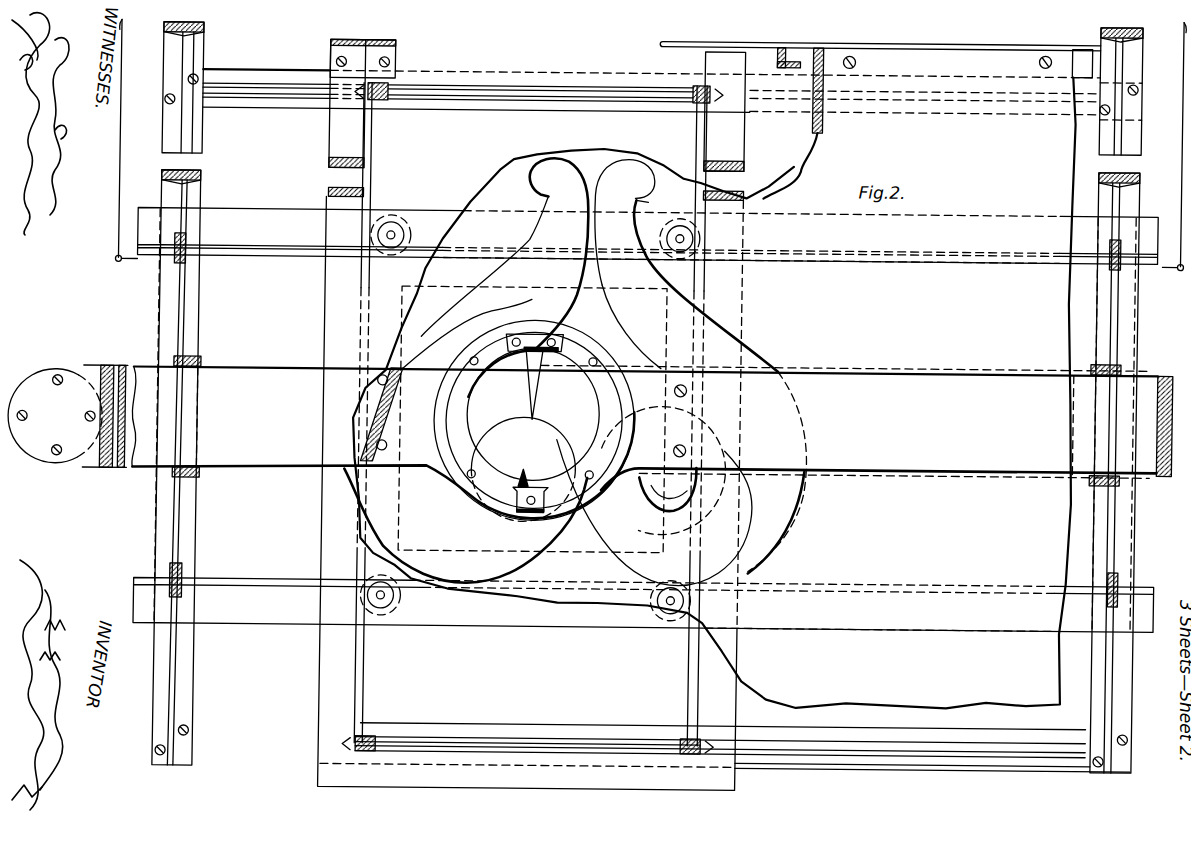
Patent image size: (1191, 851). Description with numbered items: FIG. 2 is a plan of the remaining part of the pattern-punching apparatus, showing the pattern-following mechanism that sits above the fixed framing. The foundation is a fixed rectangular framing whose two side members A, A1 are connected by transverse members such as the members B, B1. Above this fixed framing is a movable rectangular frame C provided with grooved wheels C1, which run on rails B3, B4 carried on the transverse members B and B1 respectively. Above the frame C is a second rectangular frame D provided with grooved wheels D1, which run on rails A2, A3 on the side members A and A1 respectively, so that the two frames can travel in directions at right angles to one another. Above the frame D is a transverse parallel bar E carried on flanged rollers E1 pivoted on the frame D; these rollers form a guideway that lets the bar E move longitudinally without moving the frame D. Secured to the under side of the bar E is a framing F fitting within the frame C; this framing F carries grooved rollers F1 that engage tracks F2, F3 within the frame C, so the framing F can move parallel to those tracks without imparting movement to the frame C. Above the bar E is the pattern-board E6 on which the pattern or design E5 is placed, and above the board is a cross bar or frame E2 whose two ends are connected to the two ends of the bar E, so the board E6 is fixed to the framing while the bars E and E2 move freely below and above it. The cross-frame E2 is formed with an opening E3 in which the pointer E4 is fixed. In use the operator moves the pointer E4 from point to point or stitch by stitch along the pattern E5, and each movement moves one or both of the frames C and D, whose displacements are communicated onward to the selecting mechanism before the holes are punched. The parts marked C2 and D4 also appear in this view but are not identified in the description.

The side member A is at (160, 140).
The side member A1 is at (1125, 140).
The rail A2 is at (186, 303).
The rail A3 is at (1122, 197).
The transverse member B is at (810, 760).
The transverse member B1 is at (505, 100).
The rail B3 is at (553, 745).
The rail B4 is at (802, 100).
The movable rectangular frame C is at (707, 416).
The grooved wheels C1 is at (370, 745).
The plate C2 is at (385, 50).
The second rectangular frame D is at (645, 420).
The grooved wheels D1 is at (187, 260).
The side rod D4 is at (1177, 162).
The transverse parallel bar E is at (115, 370).
The flanged rollers E1 is at (200, 366).
The cross bar or frame E2 is at (531, 420).
The opening E3 is at (534, 420).
The pointer E4 is at (528, 375).
The pattern E5 is at (618, 330).
The pattern-board E6 is at (705, 387).
The framing F is at (400, 289).
The grooved rollers F1 is at (400, 232).
The track F2 is at (373, 200).
The track F3 is at (695, 672).